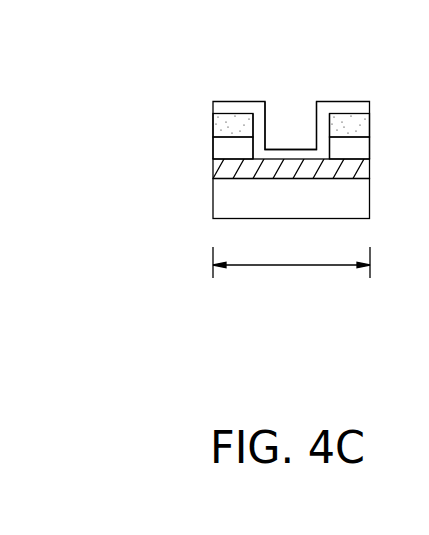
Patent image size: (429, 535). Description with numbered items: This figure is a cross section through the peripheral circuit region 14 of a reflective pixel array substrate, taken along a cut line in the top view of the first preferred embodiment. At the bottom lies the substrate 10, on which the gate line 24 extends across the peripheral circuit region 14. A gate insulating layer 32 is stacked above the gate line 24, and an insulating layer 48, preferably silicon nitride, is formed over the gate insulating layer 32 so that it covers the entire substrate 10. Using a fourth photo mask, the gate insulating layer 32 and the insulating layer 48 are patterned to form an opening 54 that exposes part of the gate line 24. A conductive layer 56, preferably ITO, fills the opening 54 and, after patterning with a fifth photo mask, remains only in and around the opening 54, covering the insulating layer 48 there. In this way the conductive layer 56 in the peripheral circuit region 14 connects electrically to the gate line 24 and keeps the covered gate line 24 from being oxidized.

The substrate 10 is at (360, 213).
The peripheral circuit region 14 is at (291, 254).
The gate line 24 is at (370, 166).
The gate insulating layer 32 is at (370, 143).
The insulating layer 48 is at (370, 122).
The opening 54 is at (295, 118).
The conductive layer 56 is at (370, 105).